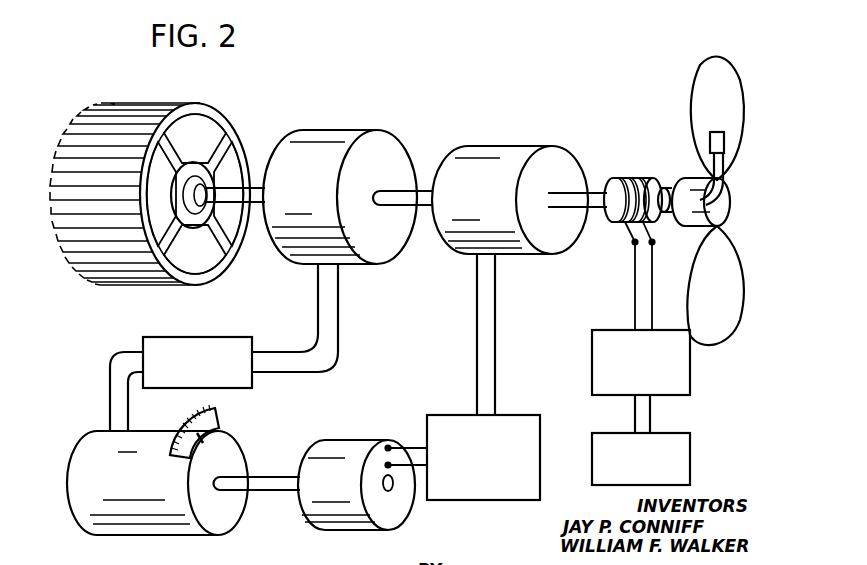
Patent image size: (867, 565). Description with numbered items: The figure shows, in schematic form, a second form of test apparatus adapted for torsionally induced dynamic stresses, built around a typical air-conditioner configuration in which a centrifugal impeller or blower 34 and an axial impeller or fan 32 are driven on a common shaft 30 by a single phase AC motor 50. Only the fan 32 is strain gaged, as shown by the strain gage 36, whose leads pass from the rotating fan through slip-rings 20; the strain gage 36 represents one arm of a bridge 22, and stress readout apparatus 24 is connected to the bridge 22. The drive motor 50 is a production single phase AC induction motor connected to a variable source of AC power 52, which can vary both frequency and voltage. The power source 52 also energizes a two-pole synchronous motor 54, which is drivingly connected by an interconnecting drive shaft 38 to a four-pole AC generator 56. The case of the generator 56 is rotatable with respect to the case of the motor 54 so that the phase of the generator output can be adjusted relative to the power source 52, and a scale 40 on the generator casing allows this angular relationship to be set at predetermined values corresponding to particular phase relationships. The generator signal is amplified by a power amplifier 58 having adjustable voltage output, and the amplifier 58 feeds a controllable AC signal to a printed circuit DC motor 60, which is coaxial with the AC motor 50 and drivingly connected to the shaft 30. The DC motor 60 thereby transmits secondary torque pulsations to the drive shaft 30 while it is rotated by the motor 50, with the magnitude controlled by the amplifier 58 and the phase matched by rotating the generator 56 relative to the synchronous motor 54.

The slip-rings 20 is at (614, 178).
The bridge 22 is at (690, 370).
The stress readout apparatus 24 is at (690, 437).
The common shaft 30 is at (418, 190).
The axial impeller or fan 32 is at (690, 94).
The centrifugal impeller or blower 34 is at (215, 108).
The strain gage 36 is at (724, 131).
The interconnecting drive shaft 38 is at (272, 477).
The scale 40 is at (220, 410).
The single phase AC motor 50 is at (507, 146).
The variable source of AC power 52 is at (548, 396).
The two-pole synchronous motor 54 is at (345, 530).
The four-pole AC generator 56 is at (148, 536).
The power amplifier 58 is at (268, 318).
The printed circuit DC motor 60 is at (337, 130).